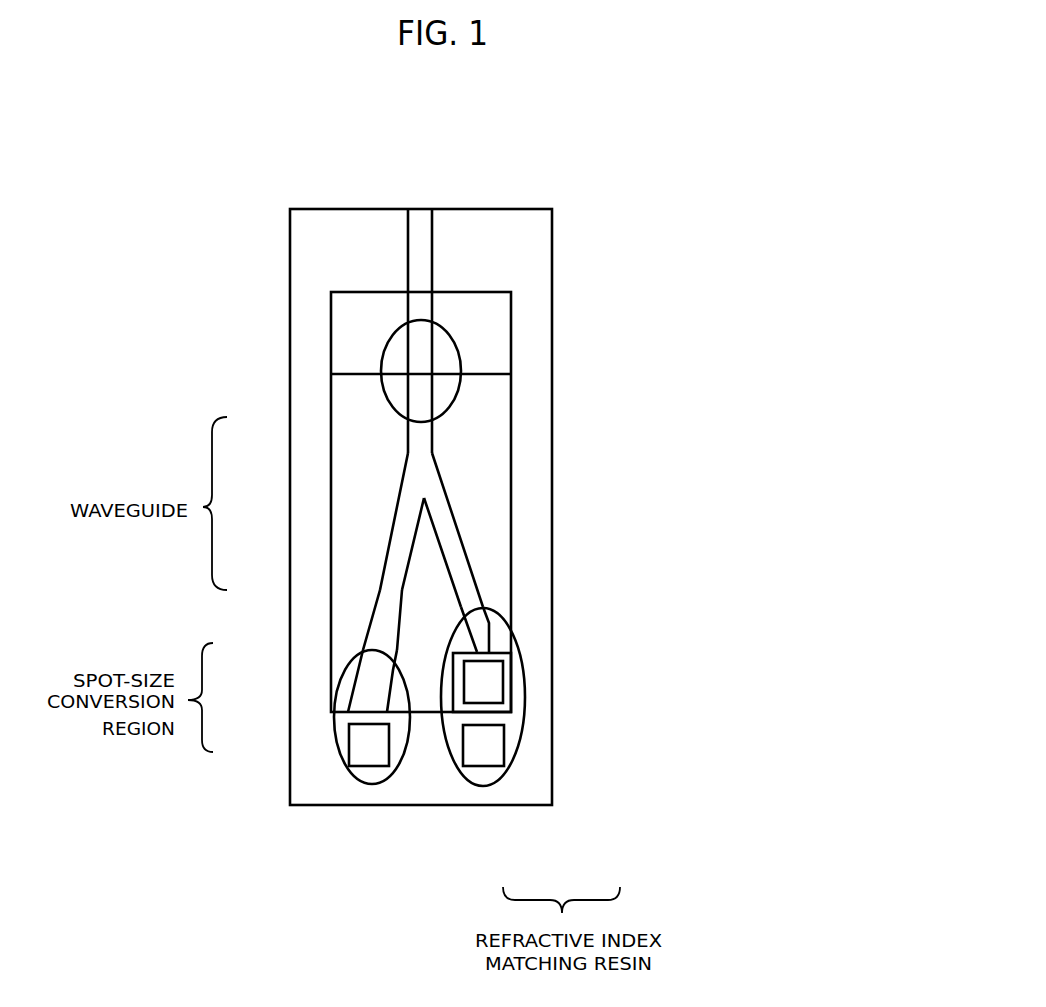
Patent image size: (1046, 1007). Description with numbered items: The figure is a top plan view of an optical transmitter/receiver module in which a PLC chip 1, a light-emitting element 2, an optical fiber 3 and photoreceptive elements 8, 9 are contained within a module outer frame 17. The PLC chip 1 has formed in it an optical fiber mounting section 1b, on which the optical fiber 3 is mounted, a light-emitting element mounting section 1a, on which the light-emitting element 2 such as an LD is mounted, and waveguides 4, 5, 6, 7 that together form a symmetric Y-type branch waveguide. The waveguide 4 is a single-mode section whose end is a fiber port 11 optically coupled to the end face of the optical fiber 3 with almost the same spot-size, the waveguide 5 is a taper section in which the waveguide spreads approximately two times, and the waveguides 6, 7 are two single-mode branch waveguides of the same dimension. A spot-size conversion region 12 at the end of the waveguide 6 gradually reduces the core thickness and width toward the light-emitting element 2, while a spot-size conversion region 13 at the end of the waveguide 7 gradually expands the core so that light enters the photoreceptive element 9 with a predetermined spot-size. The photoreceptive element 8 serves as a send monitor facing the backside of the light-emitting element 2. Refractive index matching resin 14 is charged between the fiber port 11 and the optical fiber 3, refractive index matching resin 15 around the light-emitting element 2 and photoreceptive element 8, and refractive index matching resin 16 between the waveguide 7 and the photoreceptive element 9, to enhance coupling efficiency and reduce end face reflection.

The PLC chip 1 is at (511, 510).
The light-emitting element mounting section 1a is at (513, 677).
The optical fiber mounting section 1b is at (352, 290).
The light-emitting element 2 is at (503, 697).
The optical fiber 3 is at (435, 250).
The waveguide 4 is at (408, 442).
The waveguide 5 is at (400, 487).
The waveguide 6 is at (470, 562).
The waveguide 7 is at (383, 567).
The photoreceptive element 8 is at (503, 744).
The photoreceptive element 9 is at (375, 768).
The fiber port 11 is at (426, 370).
The spot-size conversion region 12 is at (472, 625).
The spot-size conversion region 13 is at (365, 693).
The refractive index matching resin 14 is at (380, 358).
The refractive index matching resin 15 is at (507, 772).
The refractive index matching resin 16 is at (405, 758).
The module outer frame 17 is at (553, 268).